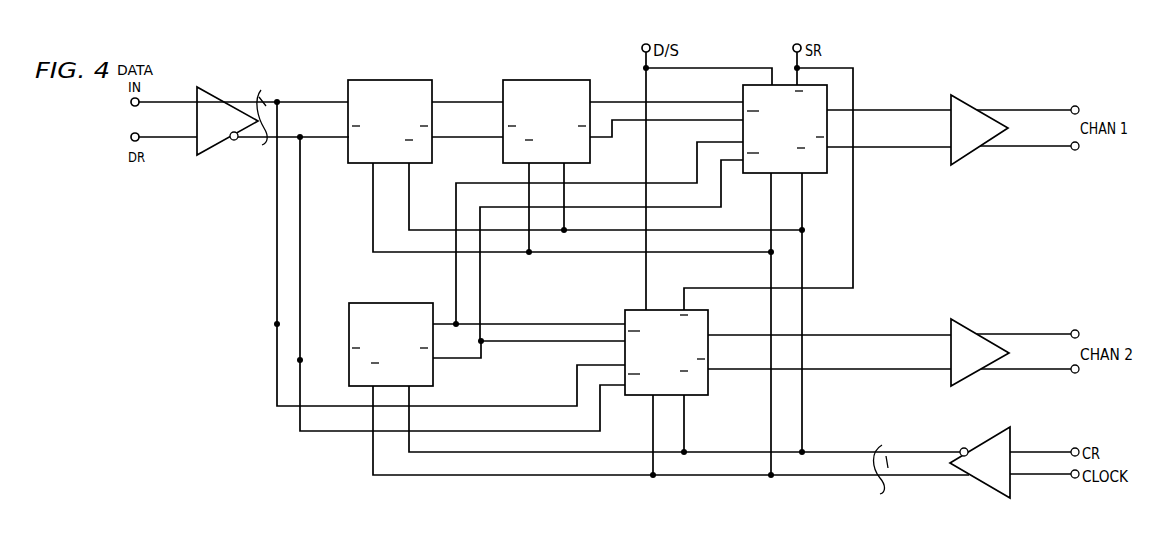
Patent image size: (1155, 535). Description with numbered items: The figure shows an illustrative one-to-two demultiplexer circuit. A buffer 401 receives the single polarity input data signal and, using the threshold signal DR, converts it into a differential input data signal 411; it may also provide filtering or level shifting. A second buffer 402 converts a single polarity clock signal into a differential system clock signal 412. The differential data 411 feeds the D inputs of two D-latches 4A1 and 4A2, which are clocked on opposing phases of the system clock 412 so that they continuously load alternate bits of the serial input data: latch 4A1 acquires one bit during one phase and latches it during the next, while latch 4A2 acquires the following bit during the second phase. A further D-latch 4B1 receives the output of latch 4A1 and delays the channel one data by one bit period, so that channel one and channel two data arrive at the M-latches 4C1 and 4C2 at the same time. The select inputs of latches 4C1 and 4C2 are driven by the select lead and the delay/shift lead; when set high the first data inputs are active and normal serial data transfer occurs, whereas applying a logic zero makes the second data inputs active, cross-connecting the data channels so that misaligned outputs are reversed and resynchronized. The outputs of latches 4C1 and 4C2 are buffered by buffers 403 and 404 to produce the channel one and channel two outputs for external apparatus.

The buffer 401 is at (220, 143).
The buffer 402 is at (988, 488).
The buffer 403 is at (963, 157).
The buffer 404 is at (969, 324).
The differential input data signal 411 is at (267, 107).
The differential system clock signal 412 is at (870, 482).
The D-latch 4A1 is at (390, 121).
The D-latch 4B1 is at (546, 121).
The M-latch 4C1 is at (785, 129).
The D-latch 4A2 is at (391, 344).
The M-latch 4C2 is at (666, 352).